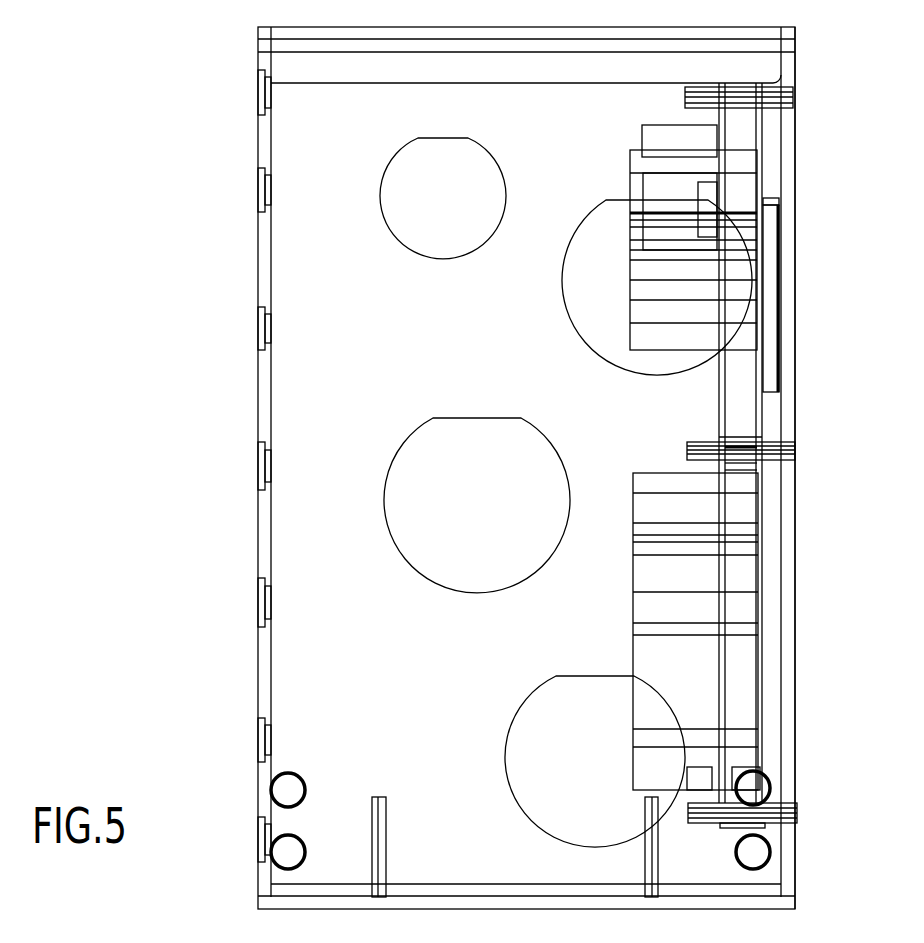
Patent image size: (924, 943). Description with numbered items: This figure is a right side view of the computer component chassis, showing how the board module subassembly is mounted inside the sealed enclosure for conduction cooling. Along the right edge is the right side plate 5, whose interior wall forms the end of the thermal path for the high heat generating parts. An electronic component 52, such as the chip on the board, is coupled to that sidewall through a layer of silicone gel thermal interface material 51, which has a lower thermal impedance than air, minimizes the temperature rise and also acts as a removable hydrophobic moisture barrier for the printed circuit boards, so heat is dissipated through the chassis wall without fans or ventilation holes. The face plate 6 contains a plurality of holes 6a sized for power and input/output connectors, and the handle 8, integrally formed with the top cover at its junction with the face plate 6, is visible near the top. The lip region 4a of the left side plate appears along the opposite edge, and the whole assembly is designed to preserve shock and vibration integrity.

The side wall of chassis 4a is at (262, 282).
The right side plate 5 is at (793, 128).
The handle 8 is at (363, 70).
The face plate 6 is at (292, 545).
The holes 6a is at (447, 572).
The electronic component 52 is at (770, 197).
The silicone gel thermal interface material 51 is at (782, 237).